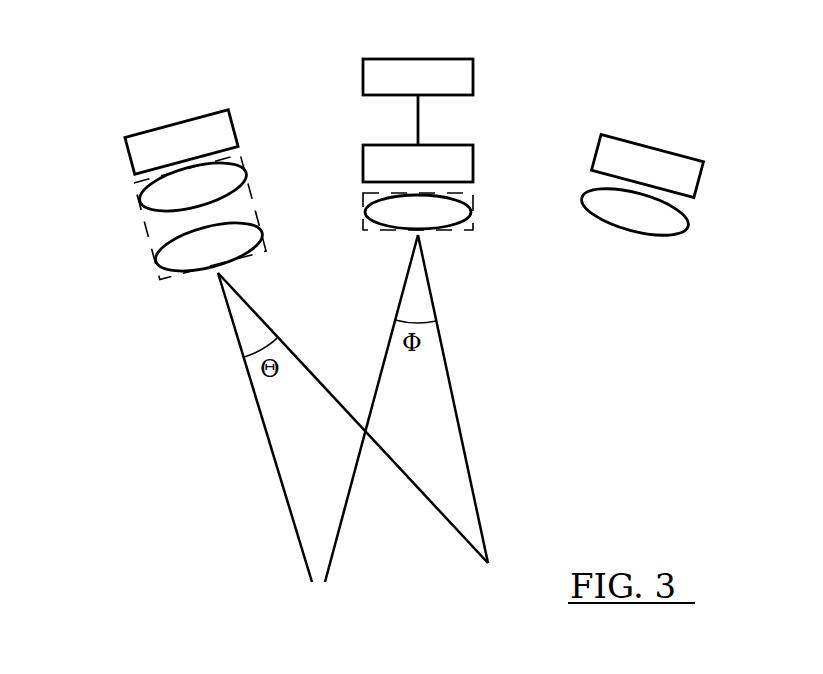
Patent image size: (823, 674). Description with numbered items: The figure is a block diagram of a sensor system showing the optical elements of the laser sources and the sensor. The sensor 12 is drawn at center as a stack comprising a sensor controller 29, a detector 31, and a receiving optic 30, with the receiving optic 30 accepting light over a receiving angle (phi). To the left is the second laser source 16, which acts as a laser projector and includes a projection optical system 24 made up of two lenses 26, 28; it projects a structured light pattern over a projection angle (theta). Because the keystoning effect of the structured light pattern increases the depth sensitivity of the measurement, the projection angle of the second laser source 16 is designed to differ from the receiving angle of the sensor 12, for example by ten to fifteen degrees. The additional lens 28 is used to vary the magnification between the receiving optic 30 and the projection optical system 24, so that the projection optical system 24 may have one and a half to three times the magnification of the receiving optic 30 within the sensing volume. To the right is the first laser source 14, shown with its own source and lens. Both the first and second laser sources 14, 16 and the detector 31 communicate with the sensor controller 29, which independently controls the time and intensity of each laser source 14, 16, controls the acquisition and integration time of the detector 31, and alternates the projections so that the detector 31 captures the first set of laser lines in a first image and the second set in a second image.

The sensor 12 is at (485, 152).
The first laser source 14 is at (733, 180).
The second laser source 16 is at (185, 167).
The projection optical system 24 is at (148, 233).
The lens 26 is at (248, 187).
The additional lens 28 is at (248, 250).
The sensor controller 29 is at (473, 78).
The receiving optic 30 is at (473, 222).
The detector 31 is at (473, 158).